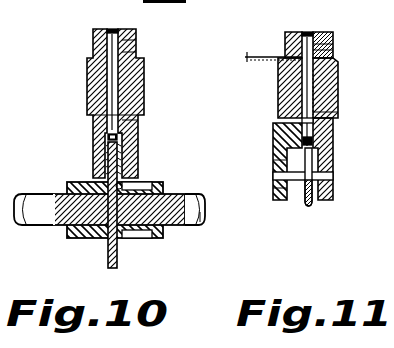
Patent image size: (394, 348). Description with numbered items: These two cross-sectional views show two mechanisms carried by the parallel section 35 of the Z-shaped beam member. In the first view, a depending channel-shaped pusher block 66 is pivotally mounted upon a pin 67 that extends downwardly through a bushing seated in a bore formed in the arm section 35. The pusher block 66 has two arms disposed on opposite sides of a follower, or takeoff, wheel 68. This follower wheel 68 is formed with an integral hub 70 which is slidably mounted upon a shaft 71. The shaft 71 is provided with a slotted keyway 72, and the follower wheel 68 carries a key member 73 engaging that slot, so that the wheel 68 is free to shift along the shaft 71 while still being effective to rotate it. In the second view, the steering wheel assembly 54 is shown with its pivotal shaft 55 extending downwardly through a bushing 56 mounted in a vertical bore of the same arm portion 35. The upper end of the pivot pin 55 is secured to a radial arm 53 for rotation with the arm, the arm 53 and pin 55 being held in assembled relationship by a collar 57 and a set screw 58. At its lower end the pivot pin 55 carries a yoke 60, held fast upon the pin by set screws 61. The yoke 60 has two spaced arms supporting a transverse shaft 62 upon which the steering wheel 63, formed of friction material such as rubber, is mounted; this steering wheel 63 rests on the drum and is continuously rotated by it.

In FIG. 10, the parallel section 35 is at (148, 82).
In FIG. 11, the parallel section 35 is at (340, 86).
In FIG. 10, the pin 67 is at (112, 94).
In FIG. 10, the follower wheel 68 is at (108, 154).
In FIG. 10, the pusher block 66 is at (140, 151).
In FIG. 10, the hub 70 is at (86, 236).
In FIG. 10, the shaft 71 is at (200, 212).
In FIG. 10, the slotted keyway 72 is at (172, 195).
In FIG. 10, the key member 73 is at (142, 178).
In FIG. 11, the radial arm 53 is at (276, 55).
In FIG. 11, the steering wheel assembly 54 is at (291, 240).
In FIG. 11, the pivotal shaft 55 is at (338, 72).
In FIG. 11, the bushing 56 is at (338, 106).
In FIG. 11, the collar 57 is at (332, 40).
In FIG. 11, the set screw 58 is at (335, 45).
In FIG. 11, the yoke 60 is at (333, 196).
In FIG. 11, the set screws 61 is at (333, 136).
In FIG. 11, the transverse shaft 62 is at (334, 178).
In FIG. 11, the steering wheel 63 is at (311, 208).